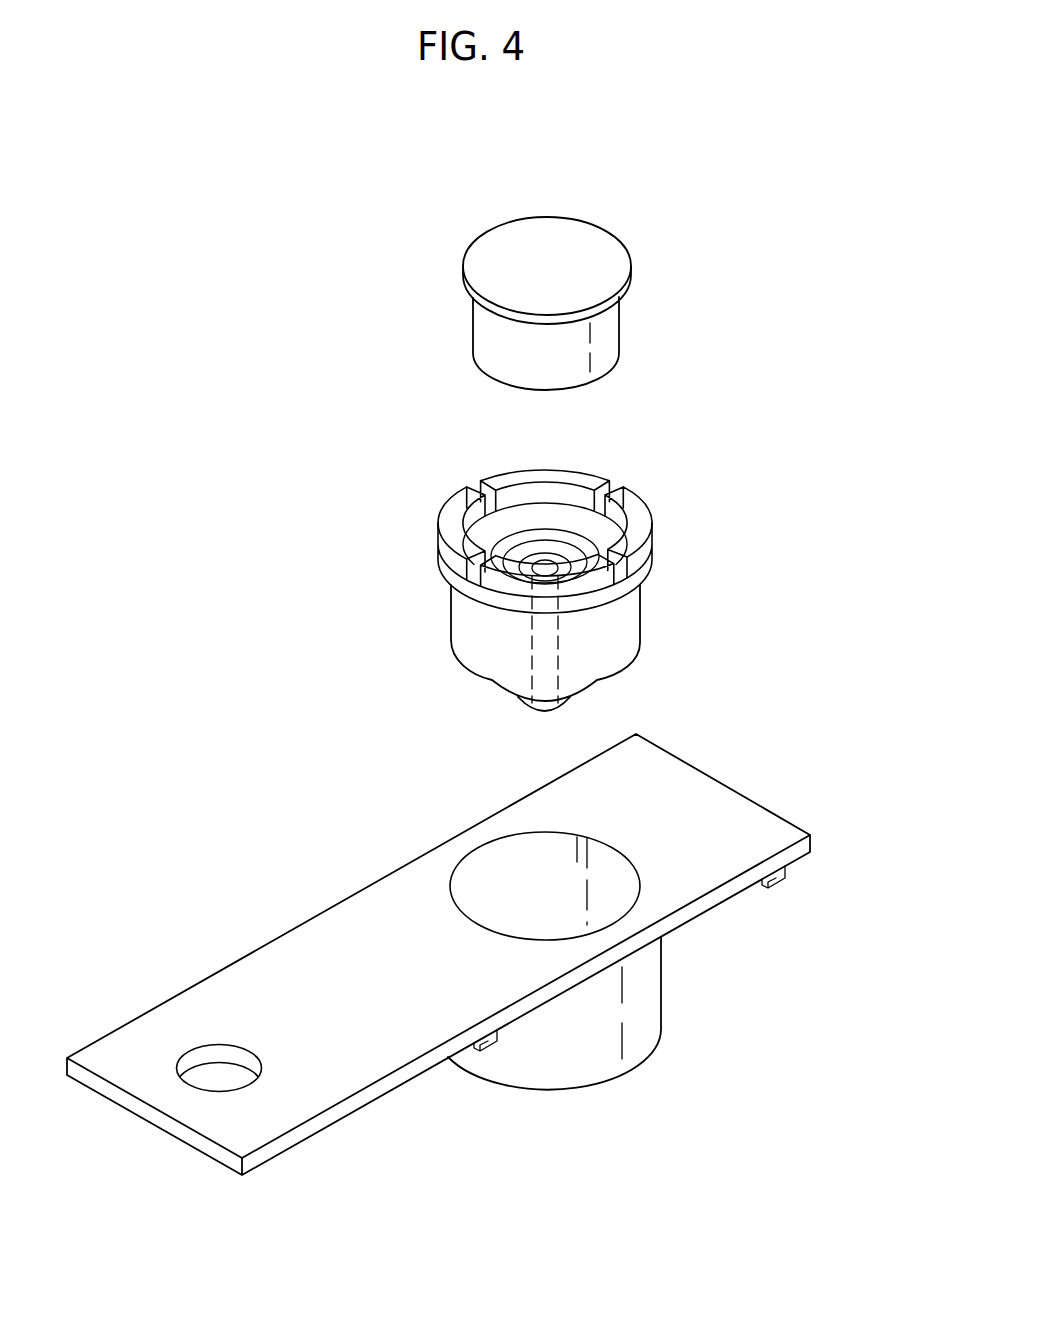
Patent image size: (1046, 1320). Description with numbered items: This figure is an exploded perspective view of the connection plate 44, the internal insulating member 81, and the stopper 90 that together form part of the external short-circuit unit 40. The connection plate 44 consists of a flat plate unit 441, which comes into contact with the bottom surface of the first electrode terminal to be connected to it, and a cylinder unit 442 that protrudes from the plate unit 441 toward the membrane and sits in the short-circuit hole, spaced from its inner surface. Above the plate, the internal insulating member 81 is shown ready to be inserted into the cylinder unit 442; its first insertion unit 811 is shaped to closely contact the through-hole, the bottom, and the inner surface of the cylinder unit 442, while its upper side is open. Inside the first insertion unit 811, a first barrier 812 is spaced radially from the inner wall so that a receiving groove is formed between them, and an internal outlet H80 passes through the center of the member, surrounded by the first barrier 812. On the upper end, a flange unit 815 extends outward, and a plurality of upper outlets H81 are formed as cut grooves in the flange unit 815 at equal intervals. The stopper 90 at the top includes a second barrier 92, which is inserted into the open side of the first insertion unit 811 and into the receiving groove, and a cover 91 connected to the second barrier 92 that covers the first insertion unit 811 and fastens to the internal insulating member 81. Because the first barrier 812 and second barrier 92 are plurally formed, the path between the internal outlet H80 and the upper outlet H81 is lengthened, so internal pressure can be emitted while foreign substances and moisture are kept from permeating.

The external short-circuit unit 40 is at (350, 184).
The stopper 90 is at (606, 220).
The cover 91 is at (607, 267).
The second barrier 92 is at (607, 329).
The internal insulating member 81 is at (655, 512).
The flange unit 815 is at (503, 485).
The upper outlet H81 is at (607, 497).
The first barrier 812 is at (592, 567).
The internal outlet H80 is at (532, 645).
The first insertion unit 811 is at (612, 640).
The connection plate 44 is at (818, 963).
The plate unit 441 is at (677, 877).
The cylinder unit 442 is at (628, 1008).